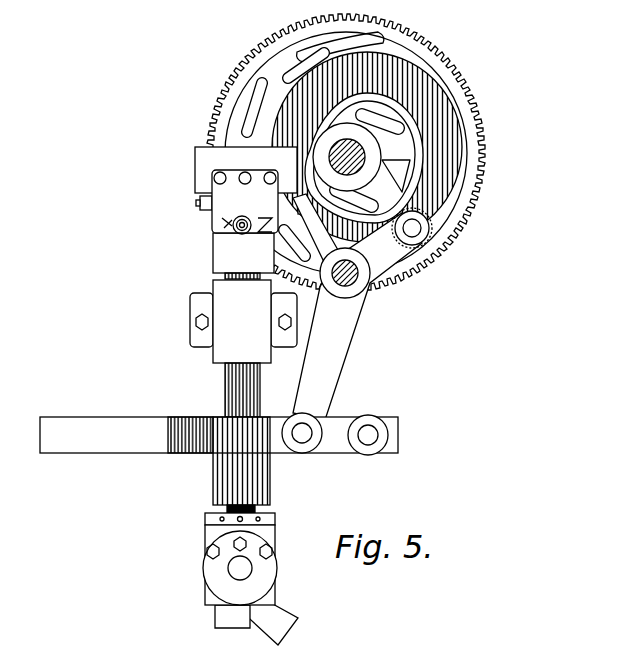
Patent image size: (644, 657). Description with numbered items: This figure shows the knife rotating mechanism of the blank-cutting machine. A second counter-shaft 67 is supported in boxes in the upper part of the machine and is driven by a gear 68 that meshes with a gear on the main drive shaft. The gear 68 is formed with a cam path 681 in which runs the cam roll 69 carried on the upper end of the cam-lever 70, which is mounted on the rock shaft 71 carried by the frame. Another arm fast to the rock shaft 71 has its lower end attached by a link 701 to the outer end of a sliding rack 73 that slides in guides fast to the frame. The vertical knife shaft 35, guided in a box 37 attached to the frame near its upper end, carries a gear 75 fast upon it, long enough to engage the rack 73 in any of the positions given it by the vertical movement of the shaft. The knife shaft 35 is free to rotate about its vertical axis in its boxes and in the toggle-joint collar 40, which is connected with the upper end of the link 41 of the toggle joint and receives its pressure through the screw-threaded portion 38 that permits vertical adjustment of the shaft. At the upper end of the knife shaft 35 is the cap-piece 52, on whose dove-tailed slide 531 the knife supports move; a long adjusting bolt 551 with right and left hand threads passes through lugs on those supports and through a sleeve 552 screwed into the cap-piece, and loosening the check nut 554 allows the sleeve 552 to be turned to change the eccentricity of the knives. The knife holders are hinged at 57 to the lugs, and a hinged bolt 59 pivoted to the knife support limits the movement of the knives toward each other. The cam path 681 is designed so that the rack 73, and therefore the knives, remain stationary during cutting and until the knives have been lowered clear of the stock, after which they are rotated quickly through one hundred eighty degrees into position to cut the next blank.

The gear 68 is at (240, 70).
The cam path 681 is at (438, 135).
The second counter-shaft 67 is at (355, 150).
The cam roll 69 is at (428, 214).
The cam-lever 70 is at (390, 256).
The rock shaft 71 is at (345, 275).
The link 701 is at (330, 428).
The sliding rack 73 is at (170, 440).
The gear 75 is at (244, 478).
The knife shaft 35 is at (242, 388).
The box 37 is at (232, 311).
The adjusting bolt 551 is at (240, 222).
The sleeve 552 is at (240, 234).
The dove-tailed slide 531 is at (226, 224).
The check nut 554 is at (234, 230).
The cap-piece 52 is at (228, 218).
The hinge 57 is at (198, 204).
The hinged bolt 59 is at (206, 514).
The toggle-joint collar 40 is at (272, 538).
The link 41 is at (265, 602).
The screw-threaded portion 38 is at (238, 512).